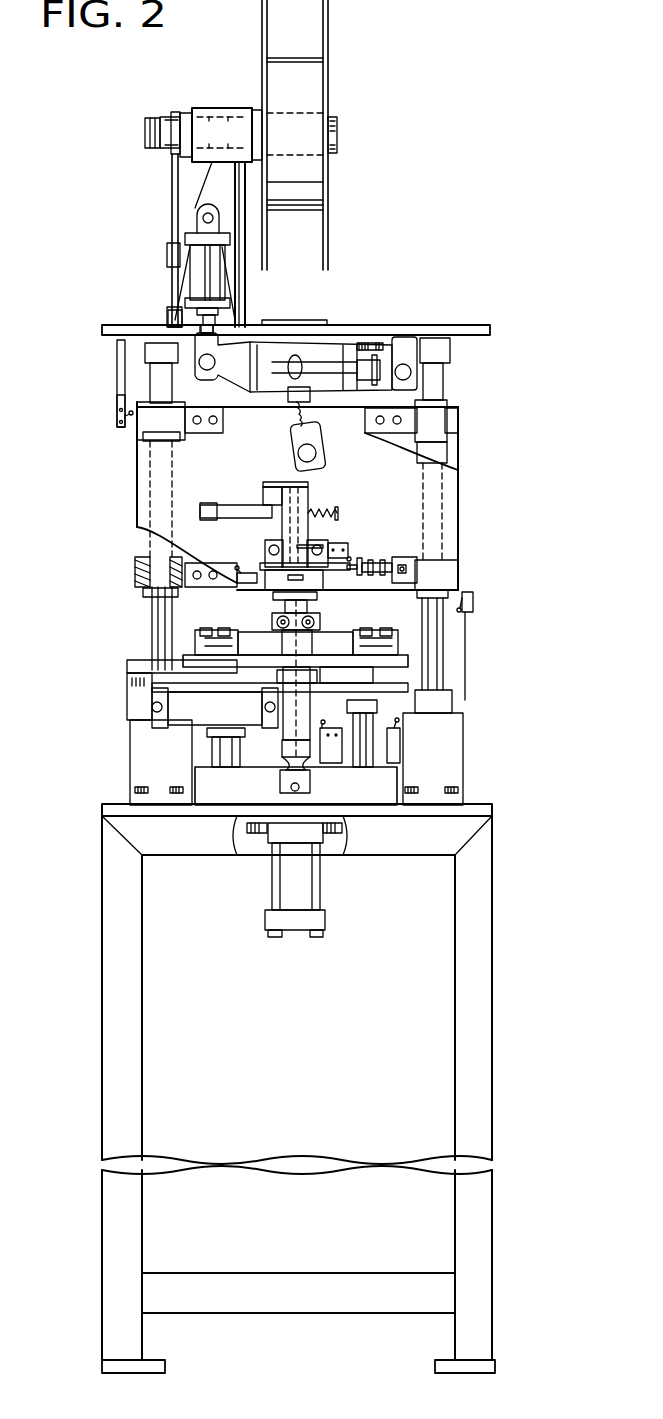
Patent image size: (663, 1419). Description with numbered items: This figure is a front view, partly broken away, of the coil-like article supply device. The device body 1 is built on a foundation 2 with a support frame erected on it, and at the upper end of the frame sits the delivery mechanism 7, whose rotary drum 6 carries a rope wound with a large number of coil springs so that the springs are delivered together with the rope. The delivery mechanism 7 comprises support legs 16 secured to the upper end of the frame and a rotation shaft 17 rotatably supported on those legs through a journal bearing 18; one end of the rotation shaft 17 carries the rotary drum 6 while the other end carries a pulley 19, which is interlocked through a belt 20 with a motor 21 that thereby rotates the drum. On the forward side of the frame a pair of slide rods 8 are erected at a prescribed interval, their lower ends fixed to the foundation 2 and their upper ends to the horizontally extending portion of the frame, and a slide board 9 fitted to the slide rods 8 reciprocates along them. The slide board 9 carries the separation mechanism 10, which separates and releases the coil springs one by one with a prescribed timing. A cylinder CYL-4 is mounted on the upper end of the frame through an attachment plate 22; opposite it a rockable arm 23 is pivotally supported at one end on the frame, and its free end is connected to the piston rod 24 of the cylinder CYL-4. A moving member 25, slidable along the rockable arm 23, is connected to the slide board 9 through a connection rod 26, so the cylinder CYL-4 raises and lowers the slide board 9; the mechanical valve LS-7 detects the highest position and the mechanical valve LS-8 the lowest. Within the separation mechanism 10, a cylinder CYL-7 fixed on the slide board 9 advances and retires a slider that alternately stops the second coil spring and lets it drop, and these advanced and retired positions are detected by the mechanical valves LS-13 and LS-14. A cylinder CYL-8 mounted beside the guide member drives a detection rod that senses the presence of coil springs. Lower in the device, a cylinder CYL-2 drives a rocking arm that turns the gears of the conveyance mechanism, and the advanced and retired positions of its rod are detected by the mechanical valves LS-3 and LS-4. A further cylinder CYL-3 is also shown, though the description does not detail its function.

The device body 1 is at (483, 897).
The foundation 2 is at (480, 804).
The rotary drum 6 is at (328, 72).
The delivery mechanism 7 is at (328, 230).
The slide rods 8 is at (152, 633).
The slide board 9 is at (458, 492).
The separation mechanism 10 is at (347, 543).
The support legs 16 is at (213, 183).
The rotation shaft 17 is at (148, 122).
The journal bearing 18 is at (223, 108).
The pulley 19 is at (174, 112).
The belt 20 is at (172, 185).
The motor 21 is at (187, 230).
The attachment plate 22 is at (173, 297).
The rockable arm 23 is at (330, 350).
The piston rod 24 is at (213, 330).
The moving member 25 is at (290, 375).
The connection rod 26 is at (310, 413).
The cylinder CYL-2 is at (232, 720).
The cylinder 3 CYL-3 is at (395, 901).
The cylinder CYL-4 is at (195, 272).
The cylinder CYL-7 is at (528, 580).
The cylinder CYL-8 is at (255, 498).
The mechanical valve LS-3 is at (455, 756).
The mechanical valve LS-4 is at (363, 793).
The mechanical valve LS-7 is at (117, 420).
The mechanical valve LS-8 is at (524, 636).
The mechanical valve LS-13 is at (415, 543).
The mechanical valve LS-14 is at (252, 582).